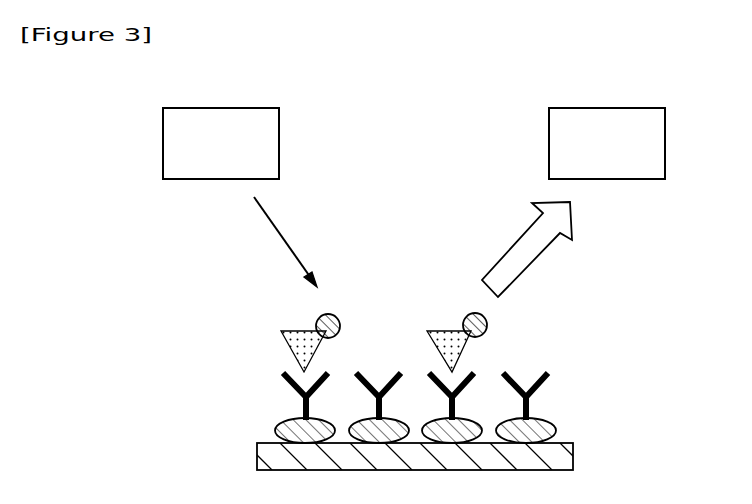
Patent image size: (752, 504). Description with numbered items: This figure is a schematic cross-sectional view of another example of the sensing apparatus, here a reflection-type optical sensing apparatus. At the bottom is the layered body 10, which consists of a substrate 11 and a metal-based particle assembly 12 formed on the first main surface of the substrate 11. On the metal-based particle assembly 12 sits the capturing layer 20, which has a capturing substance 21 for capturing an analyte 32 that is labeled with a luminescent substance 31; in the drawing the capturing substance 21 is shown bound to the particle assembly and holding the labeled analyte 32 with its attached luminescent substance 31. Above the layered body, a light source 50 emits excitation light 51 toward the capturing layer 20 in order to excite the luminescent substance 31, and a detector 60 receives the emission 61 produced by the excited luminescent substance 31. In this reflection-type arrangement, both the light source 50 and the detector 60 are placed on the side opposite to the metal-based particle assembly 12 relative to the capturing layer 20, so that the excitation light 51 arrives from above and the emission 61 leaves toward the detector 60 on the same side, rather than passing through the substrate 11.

The layered body 10 is at (645, 412).
The substrate 11 is at (563, 456).
The metal-based particle assembly 12 is at (552, 432).
The capturing layer 20 is at (646, 363).
The capturing substance 21 is at (546, 371).
The luminescent substance 31 is at (338, 317).
The analyte 32 is at (298, 331).
The light source 50 is at (268, 143).
The excitation light 51 is at (289, 236).
The detector 60 is at (654, 143).
The emission 61 is at (527, 255).